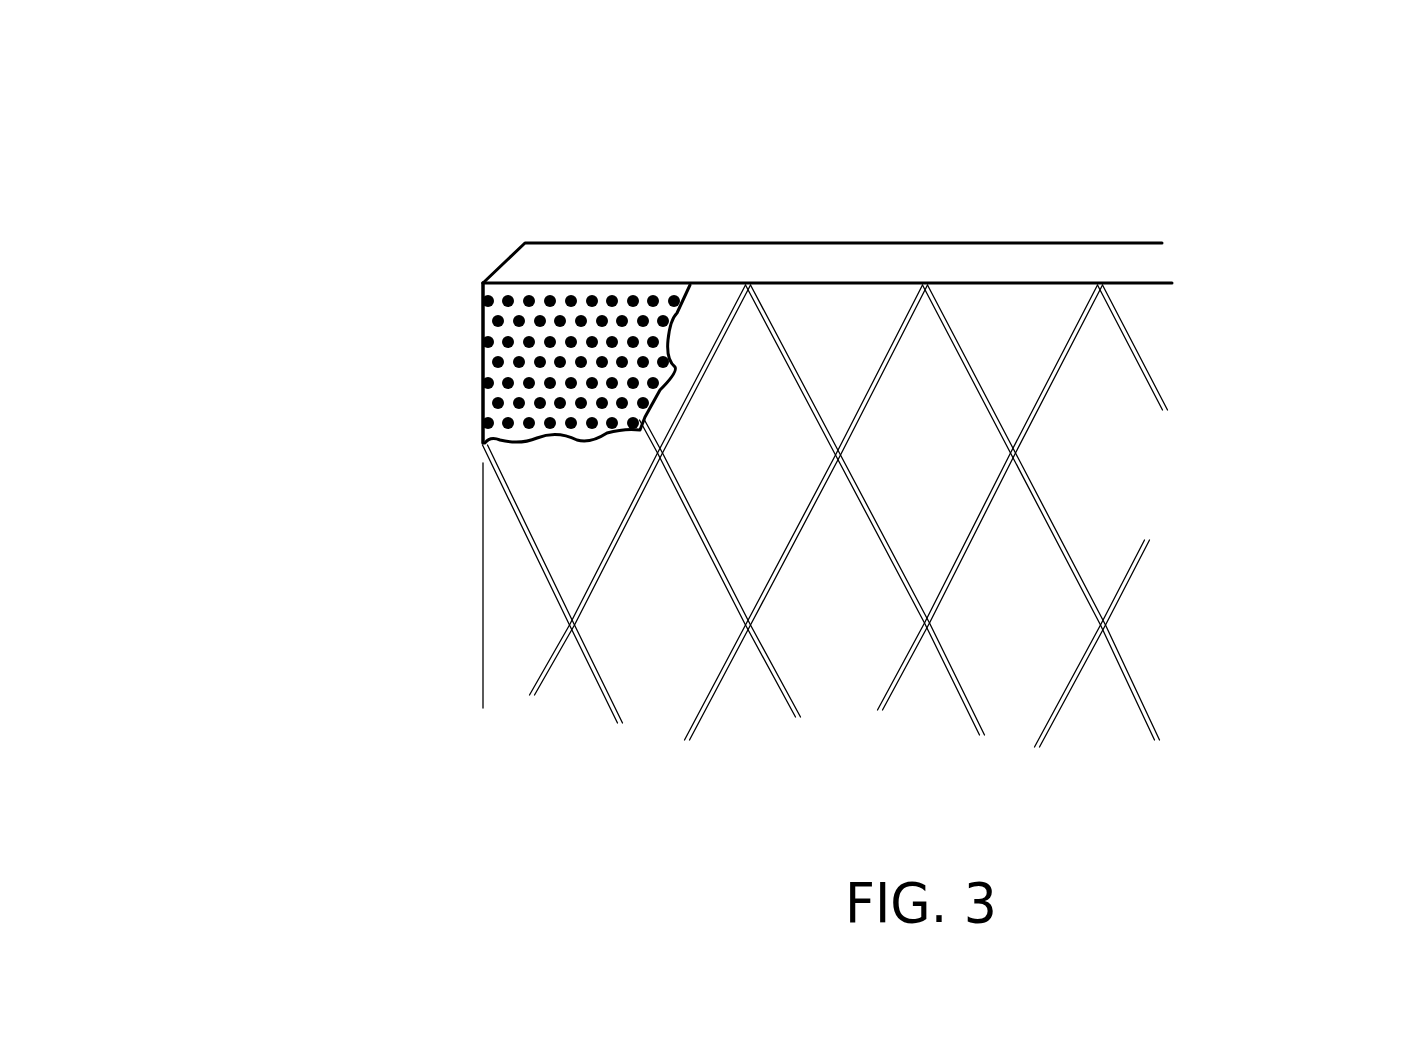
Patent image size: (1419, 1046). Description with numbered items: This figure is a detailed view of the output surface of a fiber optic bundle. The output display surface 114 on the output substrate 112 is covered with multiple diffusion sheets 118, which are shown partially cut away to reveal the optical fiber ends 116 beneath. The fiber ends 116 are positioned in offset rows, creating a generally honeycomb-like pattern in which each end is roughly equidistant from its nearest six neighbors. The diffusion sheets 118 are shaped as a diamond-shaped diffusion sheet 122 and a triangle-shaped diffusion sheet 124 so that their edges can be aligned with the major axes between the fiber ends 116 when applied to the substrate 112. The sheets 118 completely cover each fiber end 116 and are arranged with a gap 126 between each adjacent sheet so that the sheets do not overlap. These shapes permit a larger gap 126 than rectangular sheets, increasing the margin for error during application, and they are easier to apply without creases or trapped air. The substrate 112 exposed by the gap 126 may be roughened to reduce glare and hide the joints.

The output substrate 112 is at (626, 262).
The output display surface 114 is at (483, 287).
The optical fiber ends 116 is at (485, 323).
The diffusion sheets 118 is at (497, 587).
The diamond-shaped diffusion sheet 122 is at (748, 455).
The triangle-shaped diffusion sheet 124 is at (505, 628).
The gap between sheets 126 is at (1167, 412).